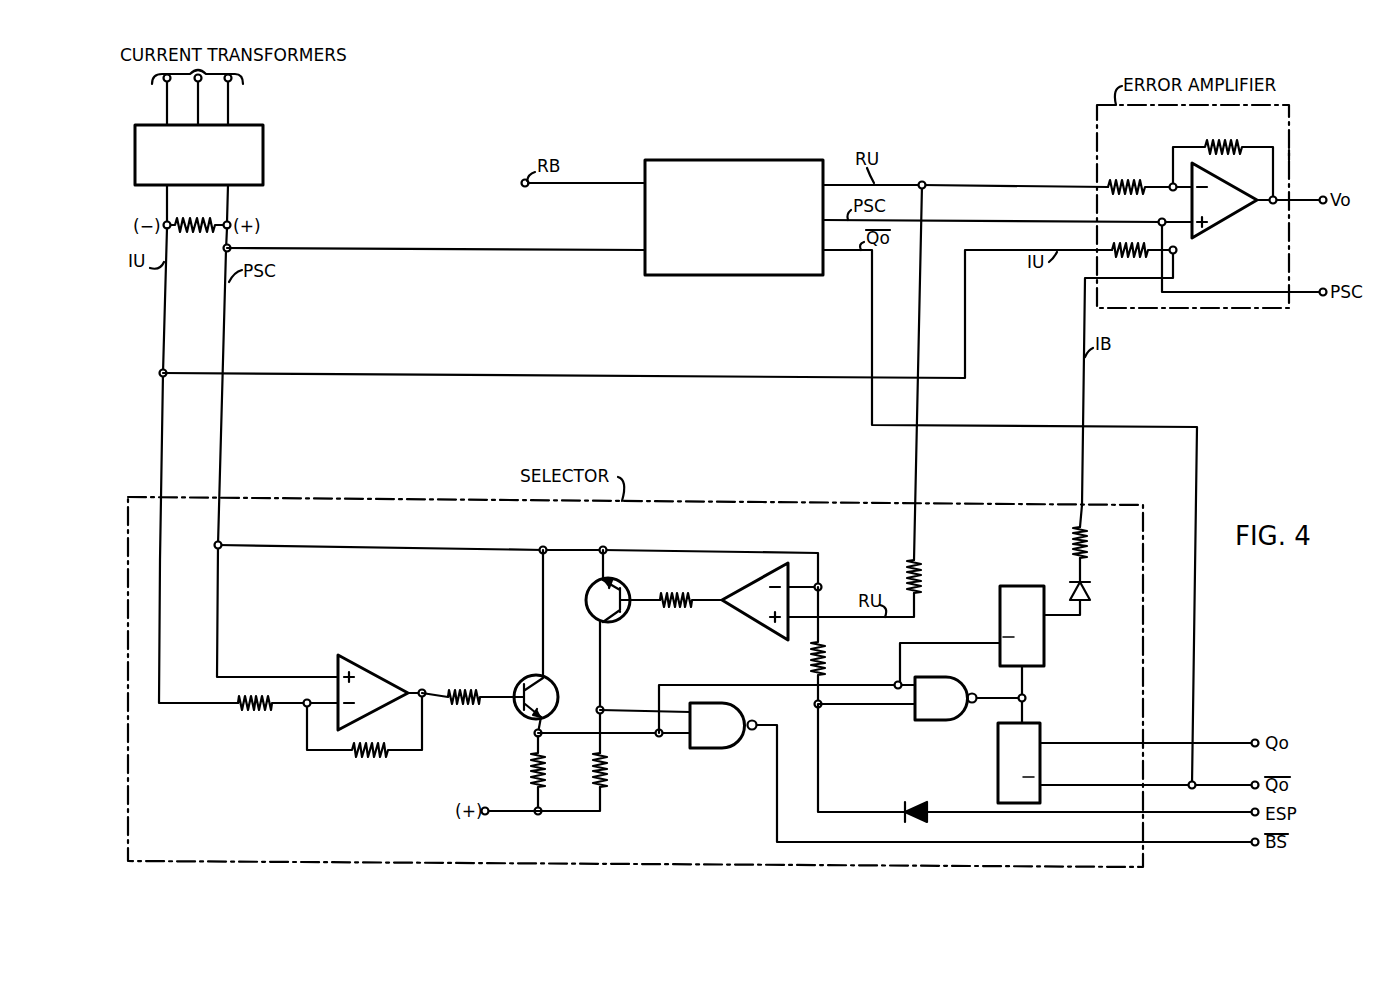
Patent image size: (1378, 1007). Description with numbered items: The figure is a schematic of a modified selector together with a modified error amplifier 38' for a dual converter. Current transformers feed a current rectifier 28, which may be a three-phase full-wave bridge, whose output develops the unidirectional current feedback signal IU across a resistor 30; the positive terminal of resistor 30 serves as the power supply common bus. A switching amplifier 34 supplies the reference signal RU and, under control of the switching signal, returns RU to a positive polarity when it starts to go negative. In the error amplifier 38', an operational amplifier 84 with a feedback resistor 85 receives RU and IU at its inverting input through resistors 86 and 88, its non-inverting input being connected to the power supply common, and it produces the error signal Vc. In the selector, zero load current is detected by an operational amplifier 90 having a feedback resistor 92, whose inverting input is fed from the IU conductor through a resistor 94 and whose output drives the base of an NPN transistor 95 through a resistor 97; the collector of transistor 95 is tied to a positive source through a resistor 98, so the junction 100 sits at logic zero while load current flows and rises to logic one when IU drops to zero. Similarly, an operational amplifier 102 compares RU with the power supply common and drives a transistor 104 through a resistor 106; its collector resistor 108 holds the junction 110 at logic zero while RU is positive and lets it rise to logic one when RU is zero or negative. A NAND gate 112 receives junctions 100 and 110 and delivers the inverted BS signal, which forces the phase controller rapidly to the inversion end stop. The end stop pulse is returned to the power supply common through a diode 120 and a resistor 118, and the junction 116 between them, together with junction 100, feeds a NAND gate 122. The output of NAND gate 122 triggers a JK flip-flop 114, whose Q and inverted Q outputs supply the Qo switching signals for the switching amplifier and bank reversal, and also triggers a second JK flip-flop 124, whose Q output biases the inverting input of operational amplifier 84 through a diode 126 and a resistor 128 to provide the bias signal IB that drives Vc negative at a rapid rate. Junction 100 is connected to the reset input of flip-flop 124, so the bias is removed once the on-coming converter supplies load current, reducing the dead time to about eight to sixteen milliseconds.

The current rectifier 28 is at (263, 168).
The resistor 30 is at (211, 218).
The switching amplifier 34 is at (756, 160).
The error amplifier 38' is at (1309, 138).
The operational amplifier 84 is at (1240, 193).
The feedback resistor 85 is at (1220, 140).
The resistor 86 is at (1125, 180).
The resistor 88 is at (1138, 245).
The operational amplifier 90 is at (376, 676).
The feedback resistor 92 is at (370, 742).
The resistor 94 is at (252, 715).
The transistor 95 is at (547, 680).
The resistor 97 is at (462, 686).
The resistor 98 is at (530, 766).
The junction 100 is at (536, 735).
The operational amplifier 102 is at (746, 626).
The transistor 104 is at (616, 585).
The resistor 106 is at (674, 592).
The resistor 108 is at (611, 771).
The junction 110 is at (602, 706).
The NAND gate 112 is at (743, 713).
The JK flip-flop 114 is at (1046, 723).
The junction 116 is at (820, 708).
The resistor 118 is at (826, 661).
The diode 120 is at (918, 803).
The NAND gate 122 is at (930, 677).
The JK flip-flop 124 is at (1025, 586).
The diode 126 is at (1090, 592).
The resistor 128 is at (1088, 548).